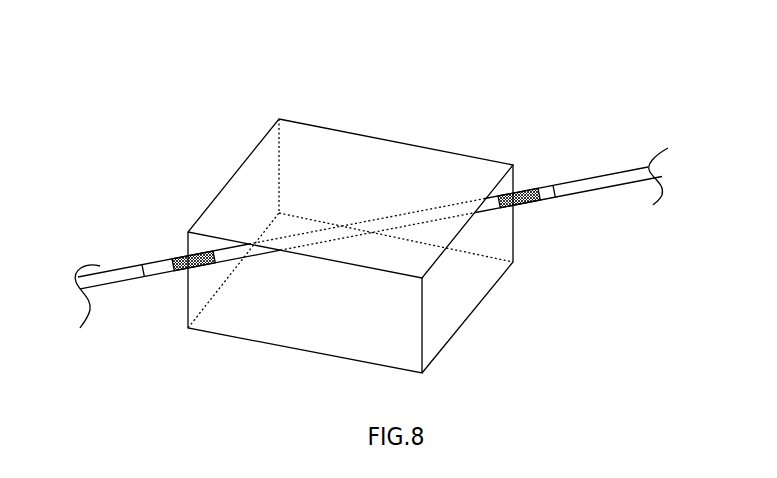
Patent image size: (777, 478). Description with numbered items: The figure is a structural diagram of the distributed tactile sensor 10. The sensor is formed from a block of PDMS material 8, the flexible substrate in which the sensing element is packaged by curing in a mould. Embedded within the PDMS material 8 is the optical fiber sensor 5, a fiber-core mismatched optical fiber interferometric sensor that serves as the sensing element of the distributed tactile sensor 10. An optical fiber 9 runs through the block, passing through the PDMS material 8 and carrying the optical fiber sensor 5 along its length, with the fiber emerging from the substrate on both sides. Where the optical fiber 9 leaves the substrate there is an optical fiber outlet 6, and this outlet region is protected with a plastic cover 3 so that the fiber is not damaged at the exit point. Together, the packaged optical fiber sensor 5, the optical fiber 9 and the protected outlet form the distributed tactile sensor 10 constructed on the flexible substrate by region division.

The distributed tactile sensor 10 is at (508, 118).
The PDMS material 8 is at (258, 180).
The optical fiber sensor 5 is at (417, 218).
The optical fiber 9 is at (123, 272).
The plastic cover 3 is at (180, 280).
The optical fiber outlet 6 is at (555, 198).